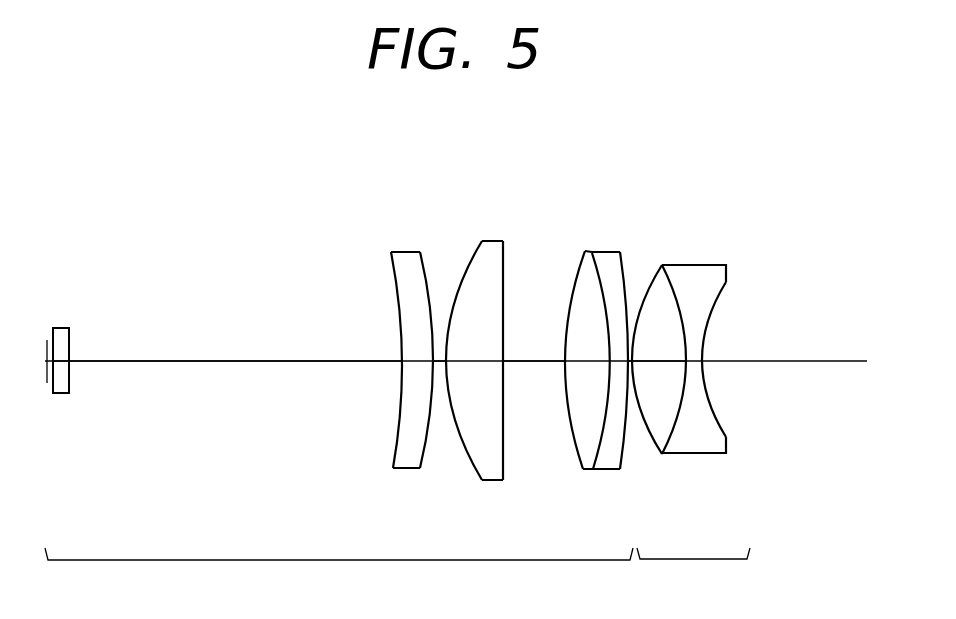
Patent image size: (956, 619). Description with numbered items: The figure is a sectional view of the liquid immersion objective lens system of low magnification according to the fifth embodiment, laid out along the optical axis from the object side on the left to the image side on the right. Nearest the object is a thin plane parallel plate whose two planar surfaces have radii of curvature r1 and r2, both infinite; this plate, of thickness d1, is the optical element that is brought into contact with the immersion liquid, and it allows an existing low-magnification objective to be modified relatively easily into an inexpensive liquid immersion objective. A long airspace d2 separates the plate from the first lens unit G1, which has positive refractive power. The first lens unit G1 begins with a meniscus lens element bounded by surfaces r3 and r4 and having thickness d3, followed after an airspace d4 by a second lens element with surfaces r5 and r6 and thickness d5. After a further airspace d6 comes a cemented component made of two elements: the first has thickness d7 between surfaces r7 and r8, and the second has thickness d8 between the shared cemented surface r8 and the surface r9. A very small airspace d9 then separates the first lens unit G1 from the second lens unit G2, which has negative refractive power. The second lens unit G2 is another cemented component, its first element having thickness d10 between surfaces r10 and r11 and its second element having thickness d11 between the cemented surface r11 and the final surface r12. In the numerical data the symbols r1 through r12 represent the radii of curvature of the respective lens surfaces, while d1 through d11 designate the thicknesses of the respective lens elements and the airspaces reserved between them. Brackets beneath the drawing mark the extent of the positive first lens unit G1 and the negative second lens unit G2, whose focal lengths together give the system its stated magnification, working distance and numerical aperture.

The first lens surface radius of curvature r1 is at (54, 332).
The second lens surface radius of curvature r2 is at (70, 340).
The third lens surface radius of curvature r3 is at (392, 279).
The fourth lens surface radius of curvature r4 is at (424, 262).
The fifth lens surface radius of curvature r5 is at (467, 262).
The sixth lens surface radius of curvature r6 is at (503, 275).
The seventh lens surface radius of curvature r7 is at (571, 283).
The eighth lens surface radius of curvature r8 is at (600, 258).
The ninth lens surface radius of curvature r9 is at (625, 267).
The tenth lens surface radius of curvature r10 is at (653, 275).
The eleventh lens surface radius of curvature r11 is at (677, 290).
The twelfth lens surface radius of curvature r12 is at (722, 298).
The plane parallel plate thickness d1 is at (62, 362).
The airspace between plate and first lens unit d2 is at (203, 361).
The first lens element thickness d3 is at (417, 362).
The airspace between first and second lens elements d4 is at (445, 362).
The second lens element thickness d5 is at (482, 362).
The airspace between second lens element and cemented component d6 is at (528, 362).
The third lens element thickness d7 is at (585, 362).
The fourth lens element thickness d8 is at (617, 362).
The airspace between first and second lens units d9 is at (629, 362).
The fifth lens element thickness d10 is at (662, 362).
The sixth lens element thickness d11 is at (695, 362).
The first lens unit G1 is at (339, 570).
The second lens unit G2 is at (693, 570).